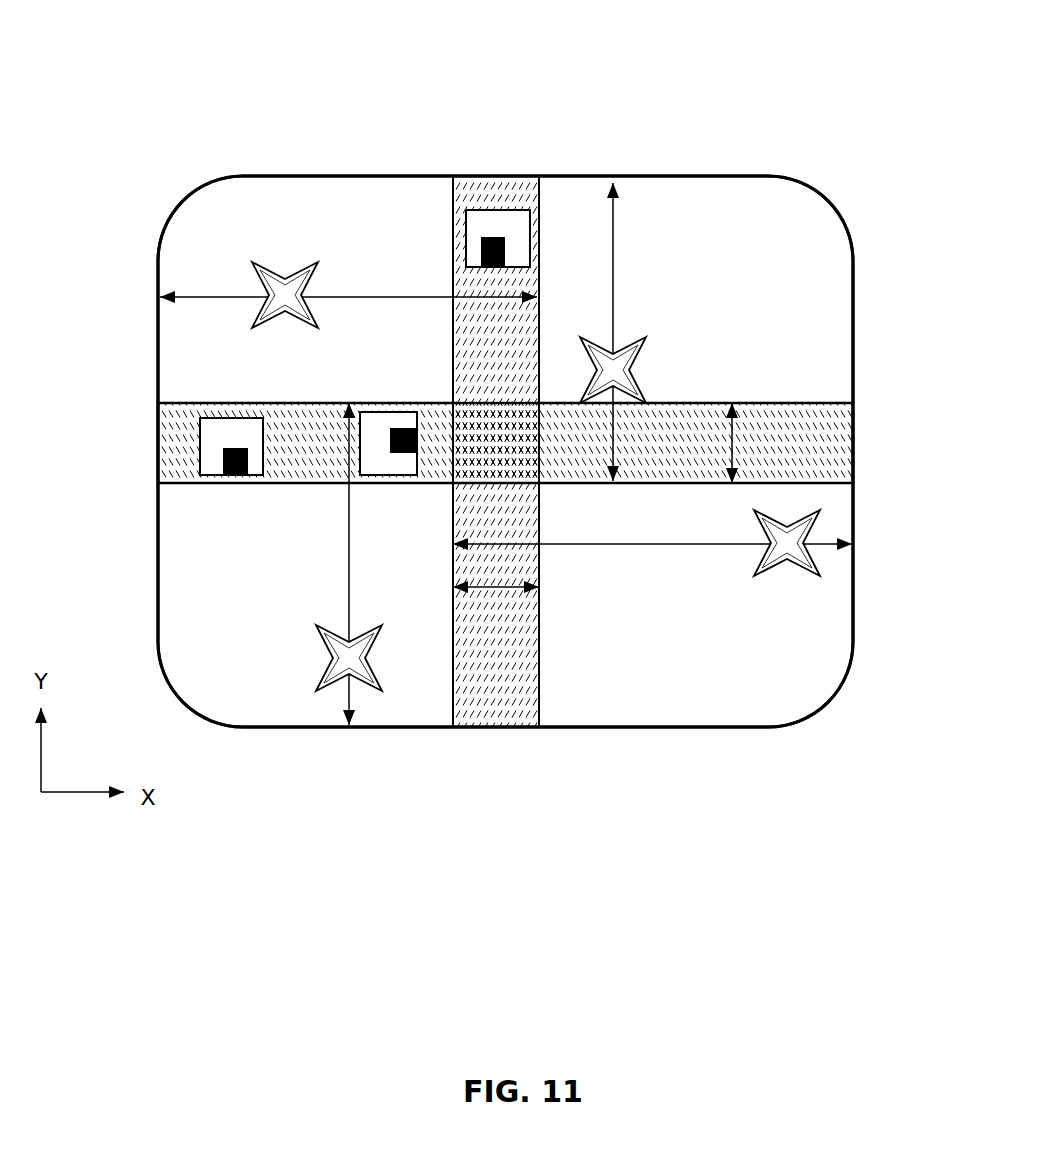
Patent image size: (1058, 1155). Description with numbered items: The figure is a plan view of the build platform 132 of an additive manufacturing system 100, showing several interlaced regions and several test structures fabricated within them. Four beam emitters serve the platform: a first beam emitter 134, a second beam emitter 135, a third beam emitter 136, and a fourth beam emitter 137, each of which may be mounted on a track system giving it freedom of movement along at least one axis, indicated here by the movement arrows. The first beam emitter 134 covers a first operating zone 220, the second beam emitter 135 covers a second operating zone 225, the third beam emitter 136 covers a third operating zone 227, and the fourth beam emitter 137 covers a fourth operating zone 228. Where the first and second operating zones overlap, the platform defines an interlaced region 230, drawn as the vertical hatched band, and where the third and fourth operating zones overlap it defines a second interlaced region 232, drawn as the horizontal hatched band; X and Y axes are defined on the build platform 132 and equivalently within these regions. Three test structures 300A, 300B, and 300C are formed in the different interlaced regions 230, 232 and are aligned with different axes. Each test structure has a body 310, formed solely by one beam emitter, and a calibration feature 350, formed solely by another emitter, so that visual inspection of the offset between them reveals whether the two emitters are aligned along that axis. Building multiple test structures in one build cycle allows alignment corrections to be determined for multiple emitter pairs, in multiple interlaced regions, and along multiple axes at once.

The additive manufacturing system 100 is at (382, 147).
The build platform 132 is at (173, 217).
The first beam emitter 134 is at (268, 297).
The second beam emitter 135 is at (770, 552).
The third beam emitter 136 is at (633, 382).
The fourth beam emitter 137 is at (367, 627).
The first operating zone 220 is at (360, 297).
The second operating zone 225 is at (602, 545).
The third operating zone 227 is at (617, 247).
The fourth operating zone 228 is at (342, 608).
The interlaced region 230 is at (453, 708).
The second interlaced region 232 is at (808, 483).
The test structure 300A is at (264, 490).
The test structure 300B is at (408, 395).
The test structure 300C is at (533, 251).
The body 310 is at (508, 227).
The calibration feature 350 is at (480, 257).